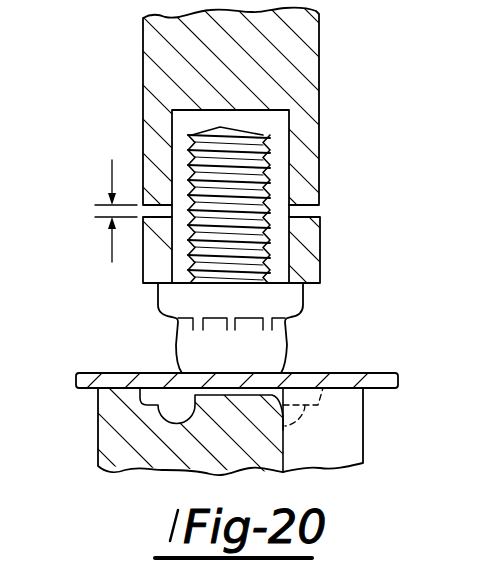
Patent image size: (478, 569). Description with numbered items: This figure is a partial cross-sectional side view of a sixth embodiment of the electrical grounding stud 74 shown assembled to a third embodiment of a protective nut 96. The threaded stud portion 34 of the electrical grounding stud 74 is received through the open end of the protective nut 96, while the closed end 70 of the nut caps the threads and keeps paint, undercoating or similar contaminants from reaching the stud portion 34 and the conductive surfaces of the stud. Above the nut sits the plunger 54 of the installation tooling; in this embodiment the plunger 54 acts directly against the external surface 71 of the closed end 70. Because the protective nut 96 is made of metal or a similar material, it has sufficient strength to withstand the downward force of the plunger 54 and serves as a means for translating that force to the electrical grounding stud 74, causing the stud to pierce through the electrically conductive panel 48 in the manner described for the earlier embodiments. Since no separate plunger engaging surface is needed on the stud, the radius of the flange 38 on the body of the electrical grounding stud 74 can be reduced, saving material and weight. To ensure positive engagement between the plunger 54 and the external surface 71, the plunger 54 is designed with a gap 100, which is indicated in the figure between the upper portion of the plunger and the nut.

The plunger 54 is at (300, 44).
The closed end 70 is at (250, 116).
The external surface 71 is at (272, 133).
The stud portion 34 is at (296, 203).
The protective nut 96 is at (295, 248).
The flange 38 is at (288, 327).
The electrical grounding stud 74 is at (312, 324).
The electrically conductive panel 48 is at (388, 373).
The gap 100 is at (100, 210).